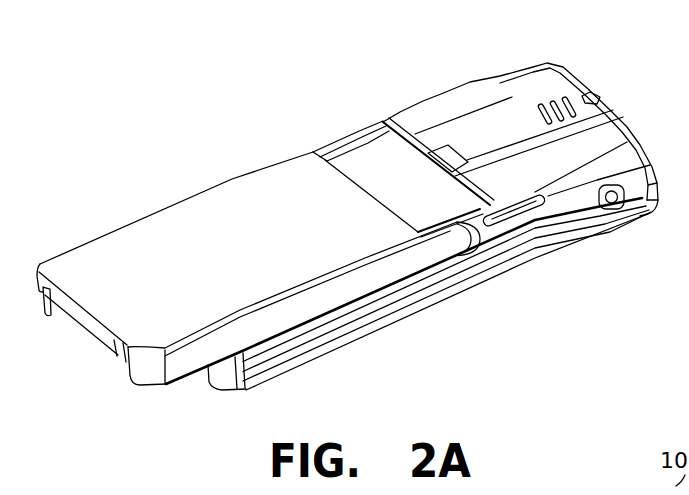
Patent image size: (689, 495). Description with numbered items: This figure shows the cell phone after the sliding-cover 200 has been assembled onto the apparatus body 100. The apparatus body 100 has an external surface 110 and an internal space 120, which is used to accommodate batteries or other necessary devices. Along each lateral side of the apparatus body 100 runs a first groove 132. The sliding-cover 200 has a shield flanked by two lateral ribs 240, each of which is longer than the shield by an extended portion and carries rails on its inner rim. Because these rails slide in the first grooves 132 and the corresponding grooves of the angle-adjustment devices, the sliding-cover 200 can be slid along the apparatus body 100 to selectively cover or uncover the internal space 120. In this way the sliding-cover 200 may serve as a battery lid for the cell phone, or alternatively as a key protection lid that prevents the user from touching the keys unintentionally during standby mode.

The apparatus body 100 is at (567, 68).
The external surface 110 is at (508, 98).
The internal space 120 is at (383, 173).
The first groove 132 is at (517, 213).
The sliding-cover 200 is at (185, 228).
The lateral rib 240 is at (318, 145).